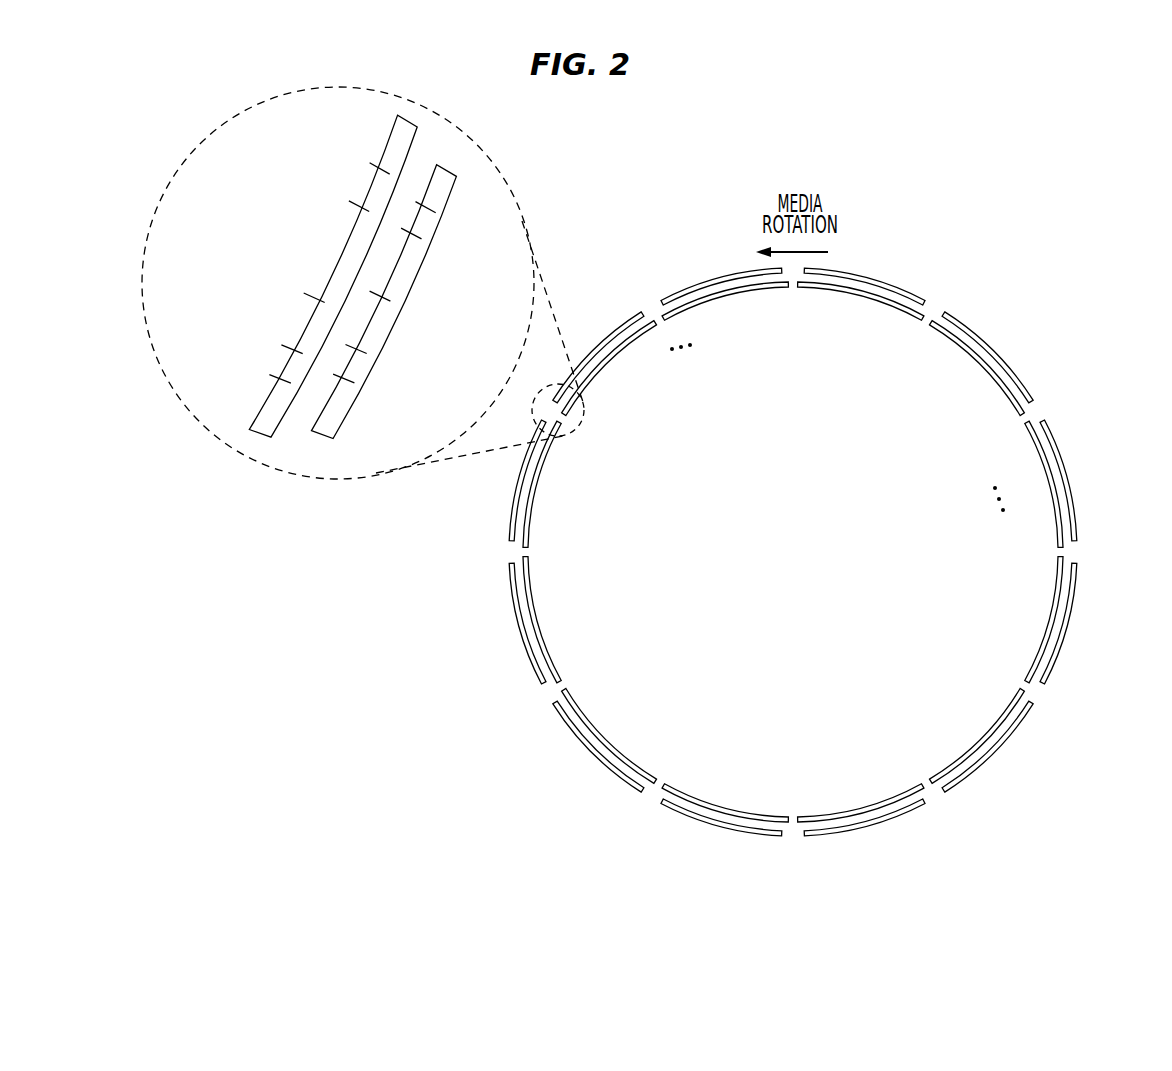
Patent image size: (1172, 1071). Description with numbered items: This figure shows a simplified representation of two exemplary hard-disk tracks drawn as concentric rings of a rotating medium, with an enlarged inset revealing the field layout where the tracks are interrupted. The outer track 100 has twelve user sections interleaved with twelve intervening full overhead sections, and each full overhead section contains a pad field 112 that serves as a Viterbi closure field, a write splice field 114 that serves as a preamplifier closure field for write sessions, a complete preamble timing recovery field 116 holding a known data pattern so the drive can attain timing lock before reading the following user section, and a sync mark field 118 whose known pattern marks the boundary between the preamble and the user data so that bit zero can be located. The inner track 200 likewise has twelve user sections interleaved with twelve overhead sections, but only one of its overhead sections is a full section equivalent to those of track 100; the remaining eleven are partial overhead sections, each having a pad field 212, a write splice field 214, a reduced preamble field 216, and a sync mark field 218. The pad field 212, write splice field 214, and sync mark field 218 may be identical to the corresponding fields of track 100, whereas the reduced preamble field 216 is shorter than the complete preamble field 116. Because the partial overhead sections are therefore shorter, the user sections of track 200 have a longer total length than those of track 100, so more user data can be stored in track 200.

The HD track 100 is at (886, 256).
The HD track 200 is at (851, 326).
The pad field 112 is at (276, 345).
The write splice (WS) field 114 is at (297, 297).
The complete preamble timing recovery field (PTRF) 116 is at (320, 248).
The sync mark (SM) field 118 is at (350, 188).
The pad field 212 is at (362, 370).
The WS field 214 is at (379, 335).
The reduced preamble field 216 is at (400, 288).
The SM field 218 is at (418, 246).